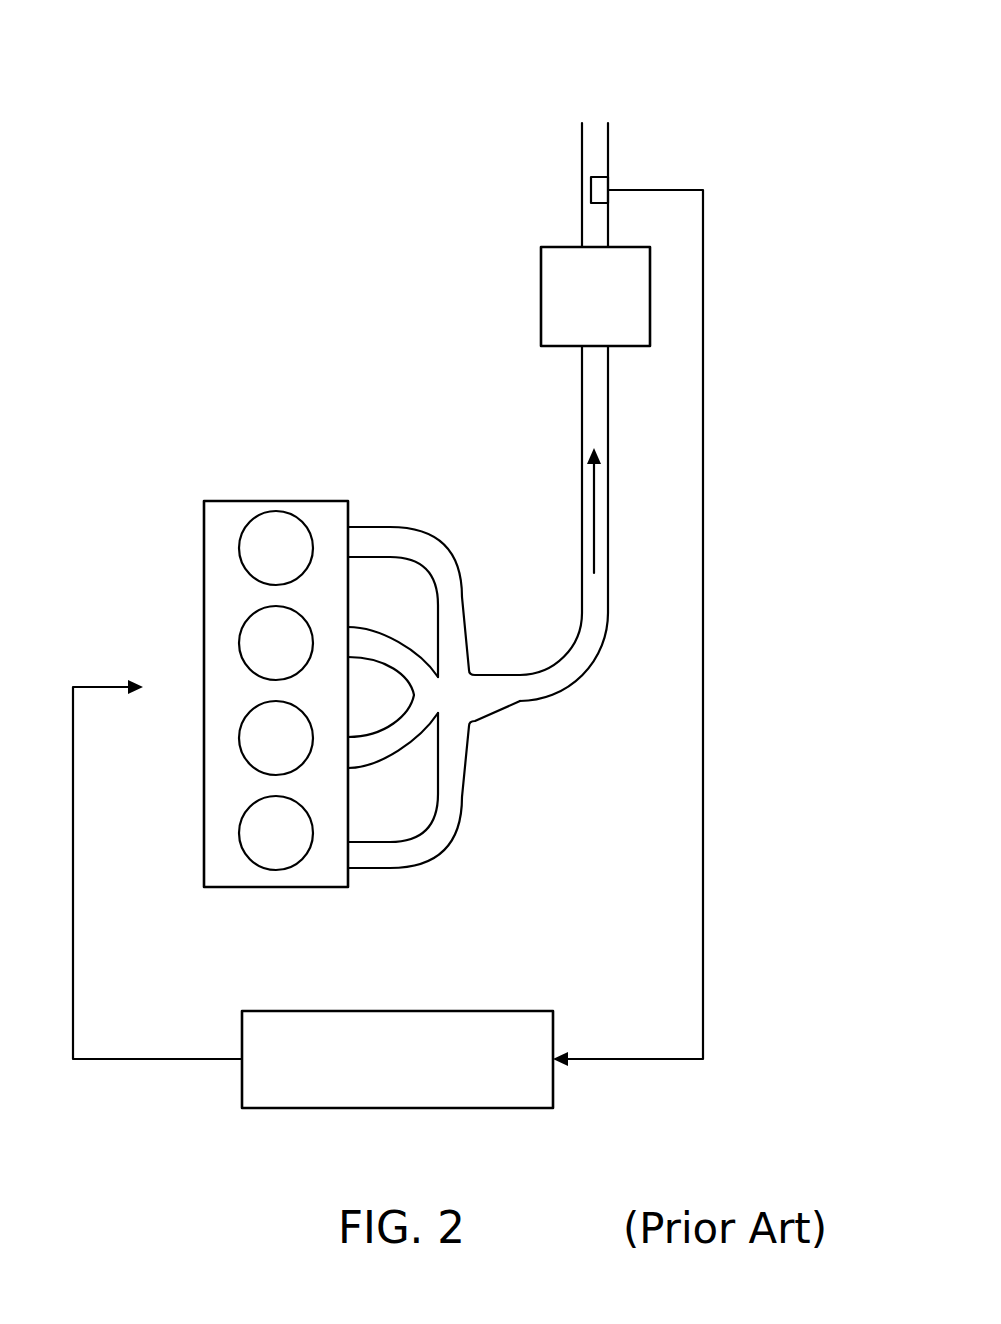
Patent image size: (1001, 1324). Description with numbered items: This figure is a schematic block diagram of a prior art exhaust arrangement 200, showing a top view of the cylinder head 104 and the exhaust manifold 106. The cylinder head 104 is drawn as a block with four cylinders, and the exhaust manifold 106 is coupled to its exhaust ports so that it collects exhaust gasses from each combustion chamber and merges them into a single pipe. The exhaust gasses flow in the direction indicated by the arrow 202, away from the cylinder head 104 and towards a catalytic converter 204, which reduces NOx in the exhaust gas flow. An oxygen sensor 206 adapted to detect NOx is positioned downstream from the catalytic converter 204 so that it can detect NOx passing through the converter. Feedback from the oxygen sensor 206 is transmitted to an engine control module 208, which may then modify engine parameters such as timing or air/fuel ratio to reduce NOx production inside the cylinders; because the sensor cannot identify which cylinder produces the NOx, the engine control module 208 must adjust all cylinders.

The prior art engine exhaust system 200 is at (96, 82).
The cylinder head 104 is at (272, 500).
The exhaust manifold 106 is at (397, 548).
The arrow 202 is at (593, 495).
The catalytic converter 204 is at (575, 307).
The oxygen sensor 206 is at (610, 190).
The engine control module 208 is at (378, 1084).